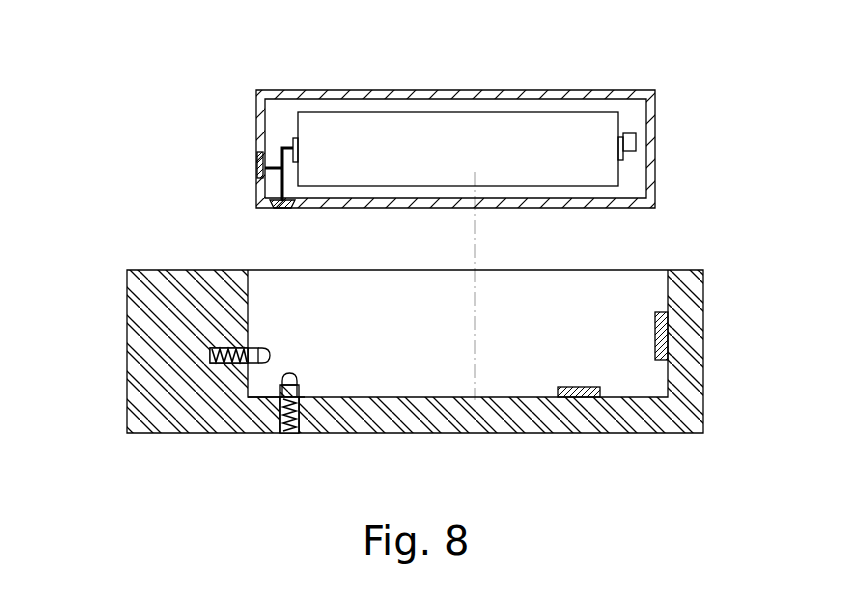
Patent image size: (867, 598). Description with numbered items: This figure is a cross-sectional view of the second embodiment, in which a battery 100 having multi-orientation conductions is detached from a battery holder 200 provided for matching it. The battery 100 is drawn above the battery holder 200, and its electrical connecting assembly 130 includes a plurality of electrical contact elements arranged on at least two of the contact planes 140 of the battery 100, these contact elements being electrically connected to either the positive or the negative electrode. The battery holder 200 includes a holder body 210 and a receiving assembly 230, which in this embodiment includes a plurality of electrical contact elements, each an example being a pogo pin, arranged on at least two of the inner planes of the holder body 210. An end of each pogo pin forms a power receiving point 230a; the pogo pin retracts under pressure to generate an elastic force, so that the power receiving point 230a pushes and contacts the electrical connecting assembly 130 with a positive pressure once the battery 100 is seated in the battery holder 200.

The battery 100 is at (419, 129).
The contact plane 140 is at (252, 91).
The electrical connecting assembly 130 is at (187, 163).
The battery holder 200 is at (371, 360).
The holder body 210 is at (177, 405).
The receiving assembly 230 is at (326, 375).
The power receiving point 230a is at (272, 380).